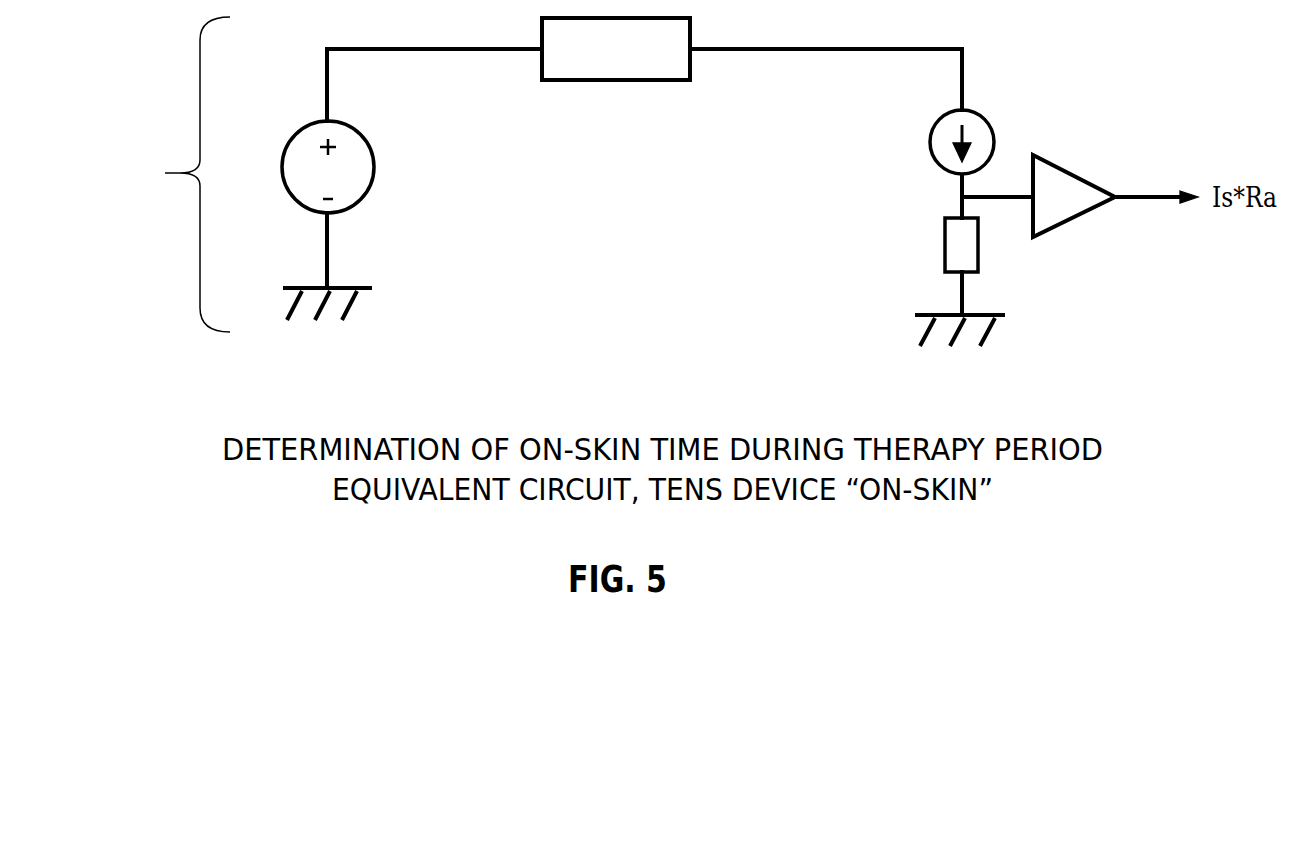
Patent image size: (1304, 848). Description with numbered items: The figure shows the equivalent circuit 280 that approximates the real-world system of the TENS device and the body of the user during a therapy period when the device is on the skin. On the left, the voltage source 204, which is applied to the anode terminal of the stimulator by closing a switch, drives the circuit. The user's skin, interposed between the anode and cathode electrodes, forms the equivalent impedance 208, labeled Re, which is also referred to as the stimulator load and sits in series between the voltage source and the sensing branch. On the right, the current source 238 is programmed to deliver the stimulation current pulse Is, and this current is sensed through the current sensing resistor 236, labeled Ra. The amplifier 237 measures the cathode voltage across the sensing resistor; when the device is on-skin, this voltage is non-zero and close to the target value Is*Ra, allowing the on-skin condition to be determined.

The equivalent circuit 280 is at (166, 174).
The voltage source 204 is at (295, 122).
The equivalent impedance 208 is at (663, 60).
The current source 238 is at (973, 130).
The current sensing resistor 236 is at (965, 247).
The amplifier 237 is at (1062, 212).